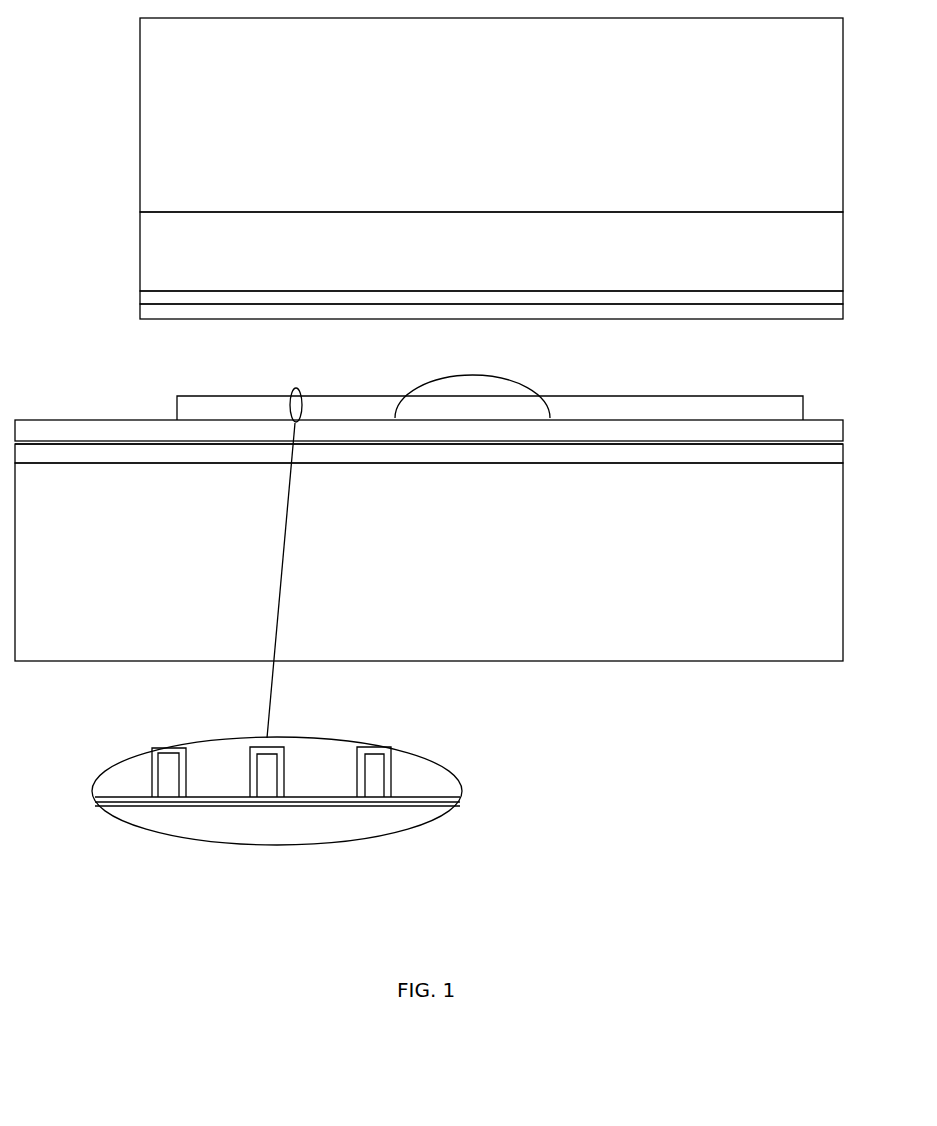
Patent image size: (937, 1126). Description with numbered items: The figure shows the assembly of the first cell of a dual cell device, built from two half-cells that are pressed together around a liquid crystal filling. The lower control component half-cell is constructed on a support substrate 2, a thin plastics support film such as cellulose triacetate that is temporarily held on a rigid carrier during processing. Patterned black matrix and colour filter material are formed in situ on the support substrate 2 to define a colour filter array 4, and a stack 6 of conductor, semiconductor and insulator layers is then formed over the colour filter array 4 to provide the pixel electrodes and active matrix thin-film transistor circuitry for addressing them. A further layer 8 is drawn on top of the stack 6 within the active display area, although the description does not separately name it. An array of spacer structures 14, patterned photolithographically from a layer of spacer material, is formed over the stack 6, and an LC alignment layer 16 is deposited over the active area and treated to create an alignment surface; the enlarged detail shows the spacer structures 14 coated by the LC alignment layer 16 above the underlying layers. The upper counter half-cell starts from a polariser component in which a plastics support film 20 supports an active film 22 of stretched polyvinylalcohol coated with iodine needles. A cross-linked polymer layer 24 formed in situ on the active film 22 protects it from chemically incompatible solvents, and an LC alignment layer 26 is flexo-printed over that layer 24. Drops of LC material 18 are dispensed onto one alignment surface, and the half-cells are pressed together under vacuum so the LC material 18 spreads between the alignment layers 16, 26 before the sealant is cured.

The support substrate 2 is at (665, 638).
The colour filter array 4 is at (682, 455).
The stack 6 is at (770, 432).
The patterned layer 8 is at (695, 408).
The spacer structures 14 is at (267, 788).
The LC alignment layer 16 is at (278, 763).
The LC material 18 is at (473, 385).
The plastics support film 20 is at (203, 108).
The active film 22 is at (168, 242).
The cross-linked polymer layer 24 is at (155, 300).
The LC alignment layer 26 is at (150, 313).